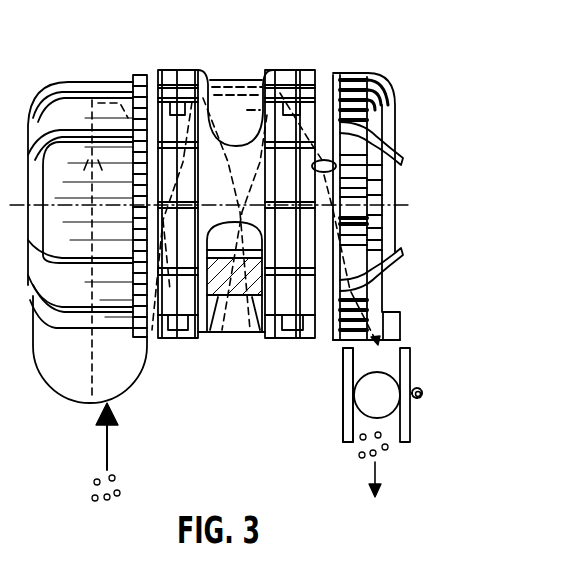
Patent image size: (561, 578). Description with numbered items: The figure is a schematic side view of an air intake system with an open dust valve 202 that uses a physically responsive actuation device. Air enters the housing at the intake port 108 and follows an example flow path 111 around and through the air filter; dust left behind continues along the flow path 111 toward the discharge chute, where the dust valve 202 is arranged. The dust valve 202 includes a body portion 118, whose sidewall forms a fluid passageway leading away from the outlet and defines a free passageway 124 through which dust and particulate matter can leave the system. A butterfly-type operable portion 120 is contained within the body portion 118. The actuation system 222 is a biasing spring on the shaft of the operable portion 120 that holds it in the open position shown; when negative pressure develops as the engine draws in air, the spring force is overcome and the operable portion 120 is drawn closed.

The intake port 108 is at (90, 402).
The flow path 111 is at (330, 162).
The body portion 118 is at (343, 397).
The operable portion 120 is at (383, 403).
The free passageway 124 is at (362, 363).
The dust valve 202 is at (320, 447).
The actuation system 222 is at (434, 395).